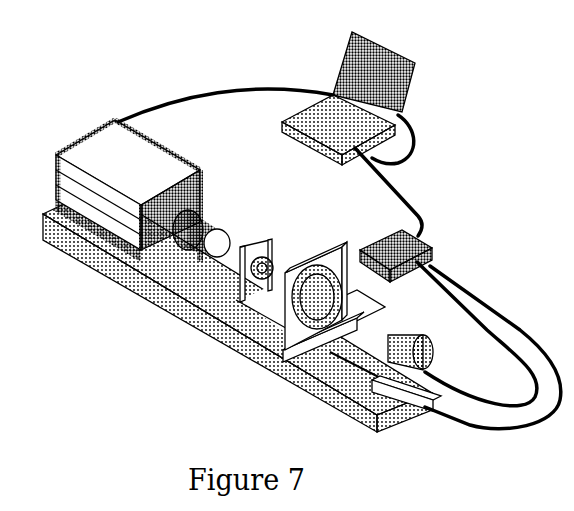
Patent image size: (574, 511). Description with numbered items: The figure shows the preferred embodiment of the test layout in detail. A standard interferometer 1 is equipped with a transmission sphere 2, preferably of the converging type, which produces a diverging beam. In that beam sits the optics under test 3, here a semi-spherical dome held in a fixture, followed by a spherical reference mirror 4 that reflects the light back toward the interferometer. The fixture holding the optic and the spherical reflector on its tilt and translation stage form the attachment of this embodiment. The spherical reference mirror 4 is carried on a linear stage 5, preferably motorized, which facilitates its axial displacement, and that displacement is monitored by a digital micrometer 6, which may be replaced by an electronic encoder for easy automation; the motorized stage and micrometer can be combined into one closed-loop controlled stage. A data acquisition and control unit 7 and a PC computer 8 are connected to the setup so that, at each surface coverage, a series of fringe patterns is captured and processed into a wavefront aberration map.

The standard interferometer 1 is at (133, 158).
The transmission sphere 2 is at (210, 217).
The optics under test 3 is at (265, 262).
The spherical reference mirror 4 is at (212, 340).
The linear stage 5 is at (330, 388).
The digital micrometer 6 is at (420, 337).
The data acquisition and control unit 7 is at (419, 256).
The PC computer 8 is at (333, 76).